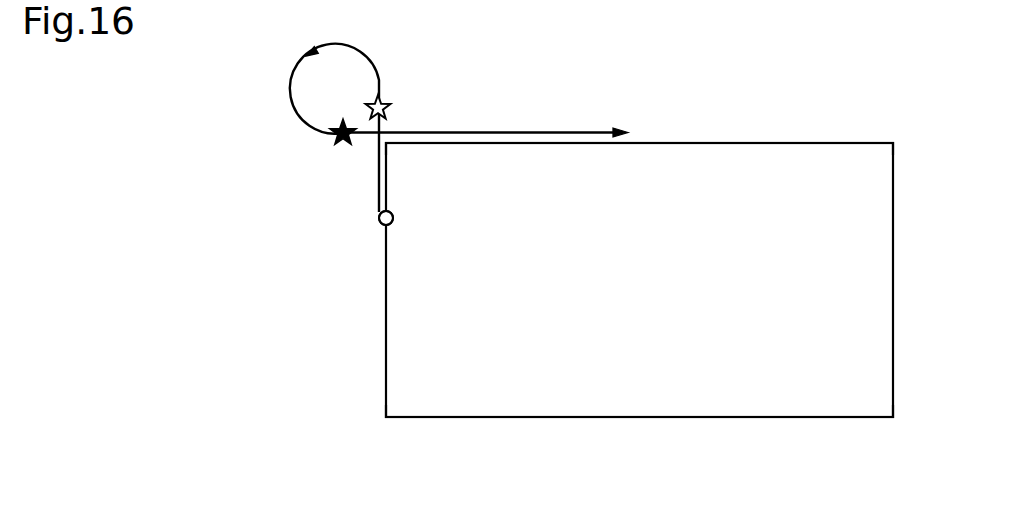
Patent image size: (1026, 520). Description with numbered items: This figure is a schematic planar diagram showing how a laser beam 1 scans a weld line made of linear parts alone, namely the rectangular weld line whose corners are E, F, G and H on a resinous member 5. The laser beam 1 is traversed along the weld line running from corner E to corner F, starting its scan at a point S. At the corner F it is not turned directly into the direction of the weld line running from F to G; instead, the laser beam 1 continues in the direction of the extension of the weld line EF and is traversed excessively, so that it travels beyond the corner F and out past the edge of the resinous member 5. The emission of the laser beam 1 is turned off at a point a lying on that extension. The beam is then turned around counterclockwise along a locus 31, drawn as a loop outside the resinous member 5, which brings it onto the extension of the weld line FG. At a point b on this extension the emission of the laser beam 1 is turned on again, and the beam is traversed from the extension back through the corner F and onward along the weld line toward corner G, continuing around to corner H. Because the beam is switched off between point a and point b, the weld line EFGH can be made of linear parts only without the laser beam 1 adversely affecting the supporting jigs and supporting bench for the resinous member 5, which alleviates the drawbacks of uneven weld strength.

The laser beam 1 is at (380, 224).
The resinous member 5 is at (783, 393).
The locus 31 is at (294, 112).
The point a is at (389, 104).
The point b is at (334, 144).
The point S is at (393, 222).
The corner E is at (388, 432).
The corner F is at (403, 161).
The corner G is at (902, 148).
The corner H is at (905, 421).